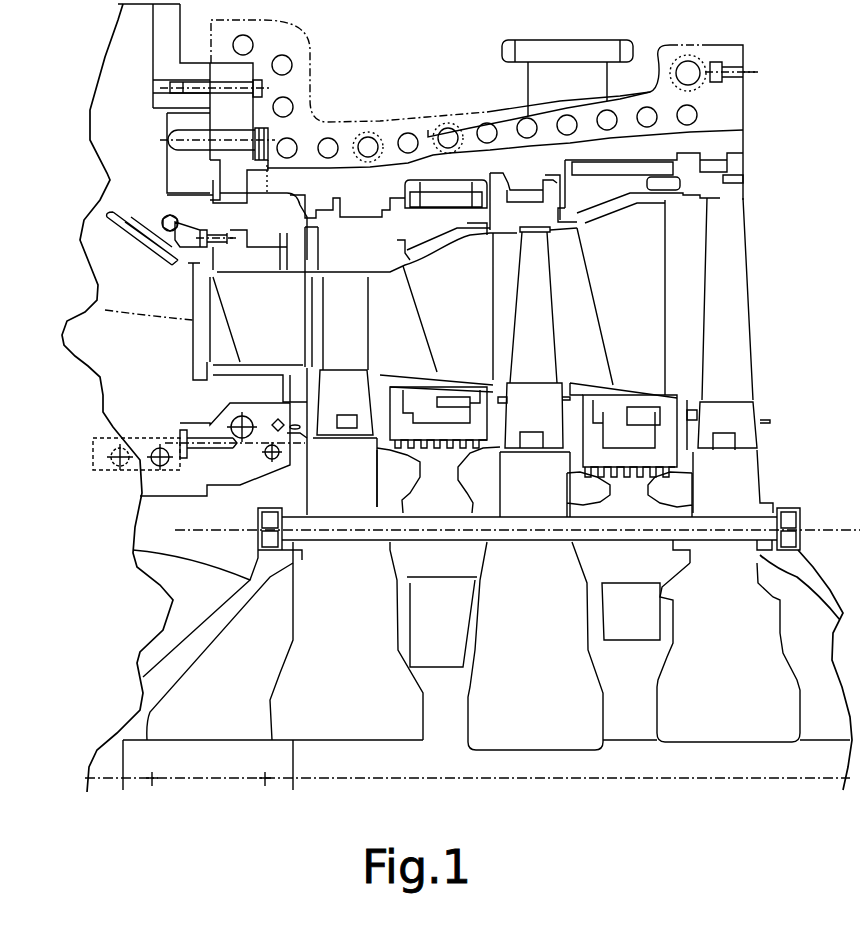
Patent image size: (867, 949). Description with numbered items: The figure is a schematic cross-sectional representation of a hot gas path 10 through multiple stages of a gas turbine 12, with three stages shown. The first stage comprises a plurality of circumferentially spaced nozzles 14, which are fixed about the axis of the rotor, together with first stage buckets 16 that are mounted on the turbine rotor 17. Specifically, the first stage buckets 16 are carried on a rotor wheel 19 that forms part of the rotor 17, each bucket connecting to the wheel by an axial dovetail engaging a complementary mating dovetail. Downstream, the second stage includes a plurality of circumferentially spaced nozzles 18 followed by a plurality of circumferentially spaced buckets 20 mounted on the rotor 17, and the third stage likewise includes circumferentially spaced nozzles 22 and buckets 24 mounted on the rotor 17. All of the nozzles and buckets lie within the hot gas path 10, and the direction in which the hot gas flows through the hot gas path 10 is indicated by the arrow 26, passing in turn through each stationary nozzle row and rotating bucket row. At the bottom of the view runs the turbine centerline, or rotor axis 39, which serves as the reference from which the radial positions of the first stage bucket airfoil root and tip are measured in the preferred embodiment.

The hot gas path 10 is at (150, 299).
The gas turbine 12 is at (527, 163).
The nozzles 14 is at (290, 317).
The buckets 16 is at (358, 317).
The turbine rotor 17 is at (133, 550).
The nozzles 18 is at (464, 302).
The rotor wheel 19 is at (359, 624).
The buckets 20 is at (546, 366).
The nozzles 22 is at (639, 316).
The buckets 24 is at (738, 356).
The arrow 26 is at (120, 295).
The rotor axis 39 is at (487, 780).